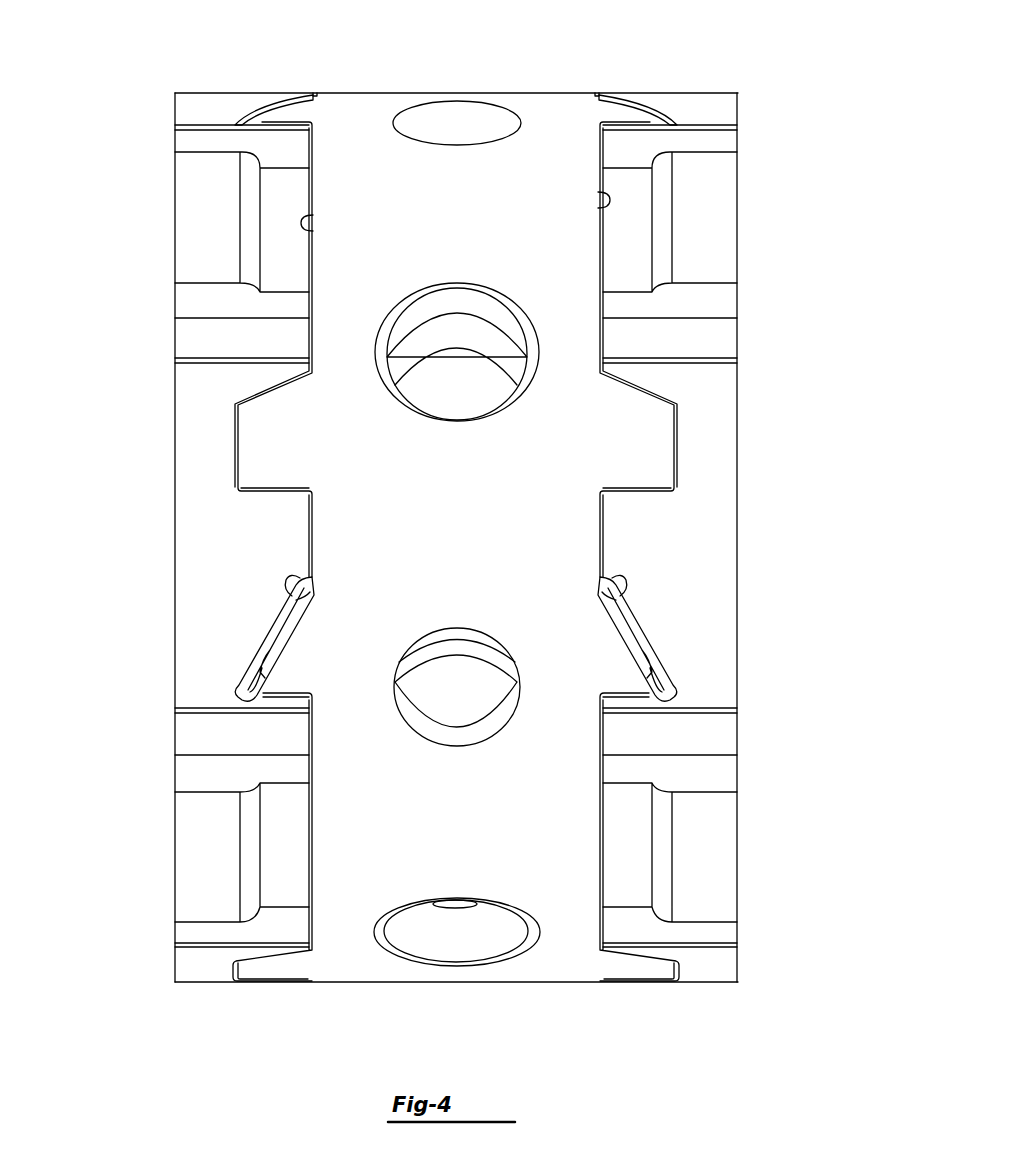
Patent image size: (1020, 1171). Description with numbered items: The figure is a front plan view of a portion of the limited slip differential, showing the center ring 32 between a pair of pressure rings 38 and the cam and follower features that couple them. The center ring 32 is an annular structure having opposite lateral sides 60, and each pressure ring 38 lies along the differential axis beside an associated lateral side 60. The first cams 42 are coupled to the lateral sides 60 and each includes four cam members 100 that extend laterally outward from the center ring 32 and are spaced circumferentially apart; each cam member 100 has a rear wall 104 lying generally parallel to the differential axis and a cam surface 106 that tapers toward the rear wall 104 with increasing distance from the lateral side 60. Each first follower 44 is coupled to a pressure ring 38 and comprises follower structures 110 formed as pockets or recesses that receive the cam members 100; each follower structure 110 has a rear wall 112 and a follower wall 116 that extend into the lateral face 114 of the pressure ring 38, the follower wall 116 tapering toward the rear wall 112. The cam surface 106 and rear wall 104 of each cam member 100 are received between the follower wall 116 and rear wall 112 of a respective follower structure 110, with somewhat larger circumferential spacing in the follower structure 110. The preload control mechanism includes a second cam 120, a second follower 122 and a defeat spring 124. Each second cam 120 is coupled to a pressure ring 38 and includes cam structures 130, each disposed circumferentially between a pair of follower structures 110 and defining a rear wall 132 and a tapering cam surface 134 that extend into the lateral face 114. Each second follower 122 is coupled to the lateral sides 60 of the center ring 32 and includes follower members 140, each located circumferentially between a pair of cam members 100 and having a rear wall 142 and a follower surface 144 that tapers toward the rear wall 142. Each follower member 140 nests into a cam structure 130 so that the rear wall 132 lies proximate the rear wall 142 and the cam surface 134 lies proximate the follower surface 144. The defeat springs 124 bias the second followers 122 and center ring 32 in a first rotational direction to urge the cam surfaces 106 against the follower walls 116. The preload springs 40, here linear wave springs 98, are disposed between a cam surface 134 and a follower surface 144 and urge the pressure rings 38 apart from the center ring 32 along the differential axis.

The center ring 32 is at (568, 113).
The pressure ring 38 is at (195, 103).
The preload spring 40 is at (290, 660).
The first cam 42 is at (273, 432).
The first follower 44 is at (200, 391).
The lateral side 60 is at (313, 223).
The linear wave spring 98 is at (605, 615).
The cam member 100 is at (280, 425).
The rear wall 104 is at (290, 481).
The cam surface 106 is at (270, 405).
The follower structure 110 is at (235, 372).
The rear wall 112 is at (272, 489).
The lateral face 114 is at (313, 303).
The follower wall 116 is at (630, 375).
The second cam 120 is at (198, 594).
The second follower 122 is at (303, 674).
The defeat spring 124 is at (262, 484).
The cam structure 130 is at (268, 632).
The rear wall 132 is at (290, 700).
The cam surface 134 is at (292, 584).
The follower member 140 is at (300, 676).
The rear wall 142 is at (295, 695).
The follower surface 144 is at (292, 660).